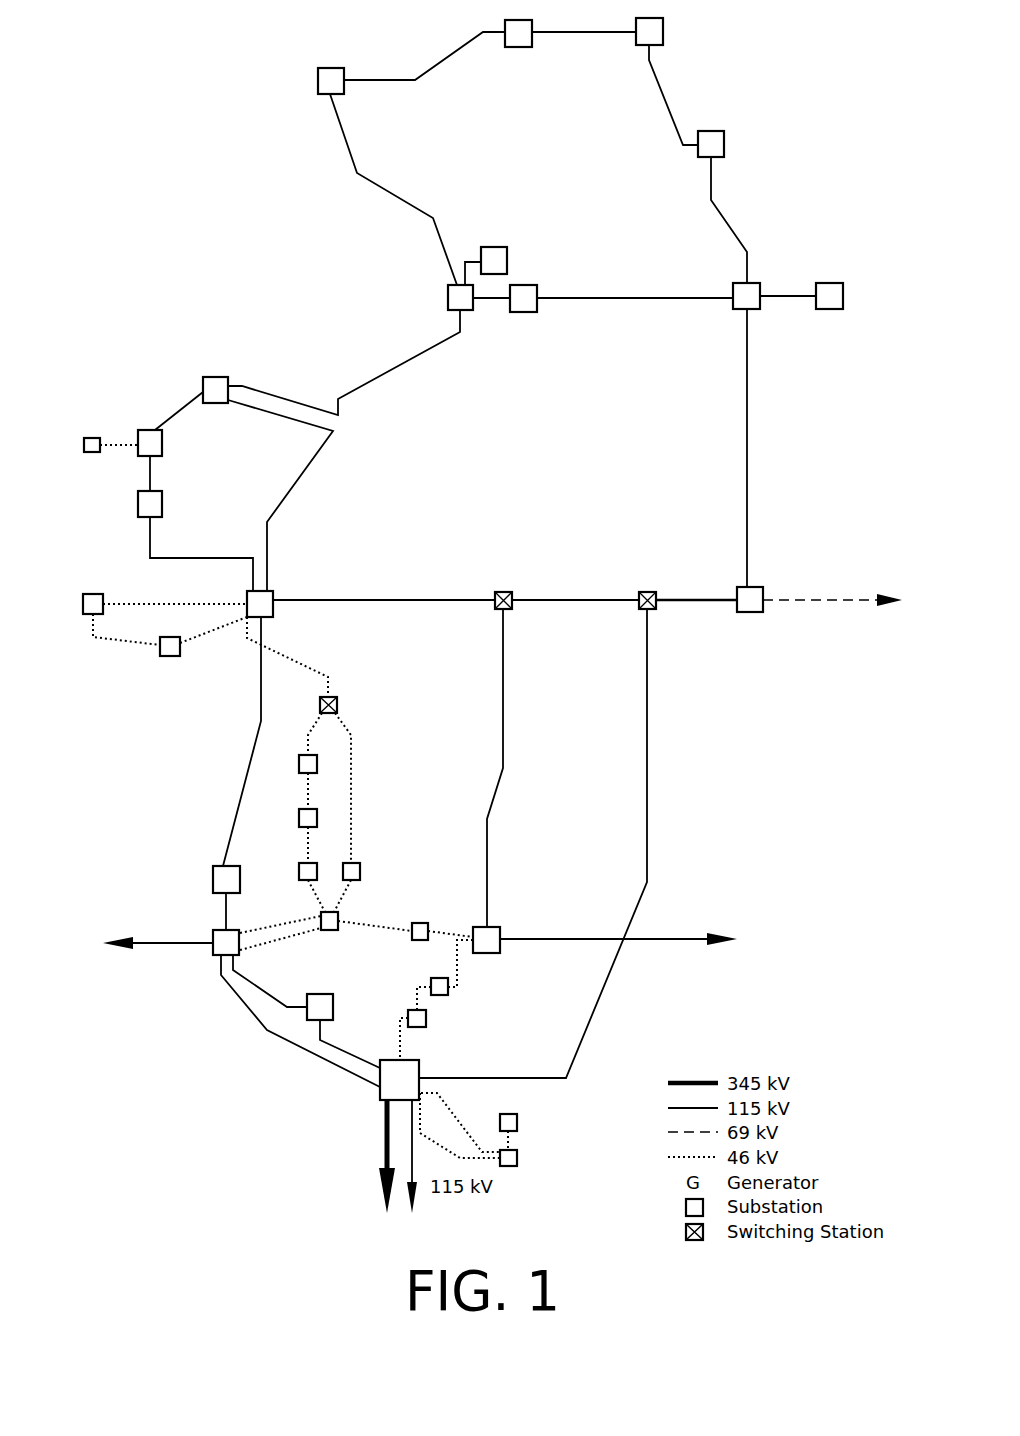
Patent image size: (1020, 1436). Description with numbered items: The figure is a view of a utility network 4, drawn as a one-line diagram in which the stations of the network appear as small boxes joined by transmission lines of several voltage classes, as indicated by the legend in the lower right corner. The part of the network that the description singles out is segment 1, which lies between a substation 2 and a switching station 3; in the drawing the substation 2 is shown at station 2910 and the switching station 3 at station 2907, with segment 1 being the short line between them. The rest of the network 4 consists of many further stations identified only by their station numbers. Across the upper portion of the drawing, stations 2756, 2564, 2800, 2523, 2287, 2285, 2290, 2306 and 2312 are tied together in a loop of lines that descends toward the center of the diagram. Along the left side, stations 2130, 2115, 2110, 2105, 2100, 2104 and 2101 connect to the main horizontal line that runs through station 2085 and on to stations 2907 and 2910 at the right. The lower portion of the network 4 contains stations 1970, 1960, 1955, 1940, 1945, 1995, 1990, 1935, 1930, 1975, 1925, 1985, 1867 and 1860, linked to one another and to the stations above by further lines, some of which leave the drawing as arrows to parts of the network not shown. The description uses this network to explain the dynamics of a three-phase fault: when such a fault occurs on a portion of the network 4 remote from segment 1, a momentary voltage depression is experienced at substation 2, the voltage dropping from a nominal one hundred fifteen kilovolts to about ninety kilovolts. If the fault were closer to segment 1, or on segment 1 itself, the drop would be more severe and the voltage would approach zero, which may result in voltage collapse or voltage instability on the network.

The segment 1 is at (708, 636).
The substation 2 is at (751, 613).
The switching station 3 is at (651, 591).
The network 4 is at (797, 78).
The substation bus 2756 is at (539, 29).
The generator bus 2564 is at (669, 29).
The substation bus 2800 is at (310, 82).
The substation bus 2523 is at (731, 143).
The substation bus 2287 is at (514, 260).
The substation bus 2285 is at (440, 299).
The substation bus 2290 is at (544, 293).
The substation bus 2306 is at (730, 308).
The substation bus 2312 is at (849, 296).
The substation bus 2130 is at (196, 387).
The generator bus 2115 is at (171, 443).
The substation bus 2110 is at (89, 457).
The generator bus 2105 is at (171, 504).
The substation bus 2100 is at (280, 599).
The generator bus 2104 is at (92, 595).
The generator bus 2101 is at (174, 658).
The switching station 1970 is at (349, 700).
The switching station 2085 is at (520, 611).
The switching station 2907 is at (663, 611).
The substation bus 2910 is at (770, 594).
The substation bus 1960 / generator bus 1960 is at (340, 933).
The substation bus 1955 is at (289, 819).
The substation bus 1940 is at (289, 873).
The substation bus 1945 is at (370, 873).
The substation bus 1995 is at (207, 879).
The substation bus 1990 is at (206, 938).
The substation bus 1935 is at (331, 934).
The substation bus 1930 is at (425, 948).
The substation bus 1975 is at (505, 947).
The substation bus 1925 is at (435, 1020).
The substation bus 1985 is at (339, 1007).
The substation bus 1867 is at (527, 1122).
The substation bus 1860 is at (527, 1157).